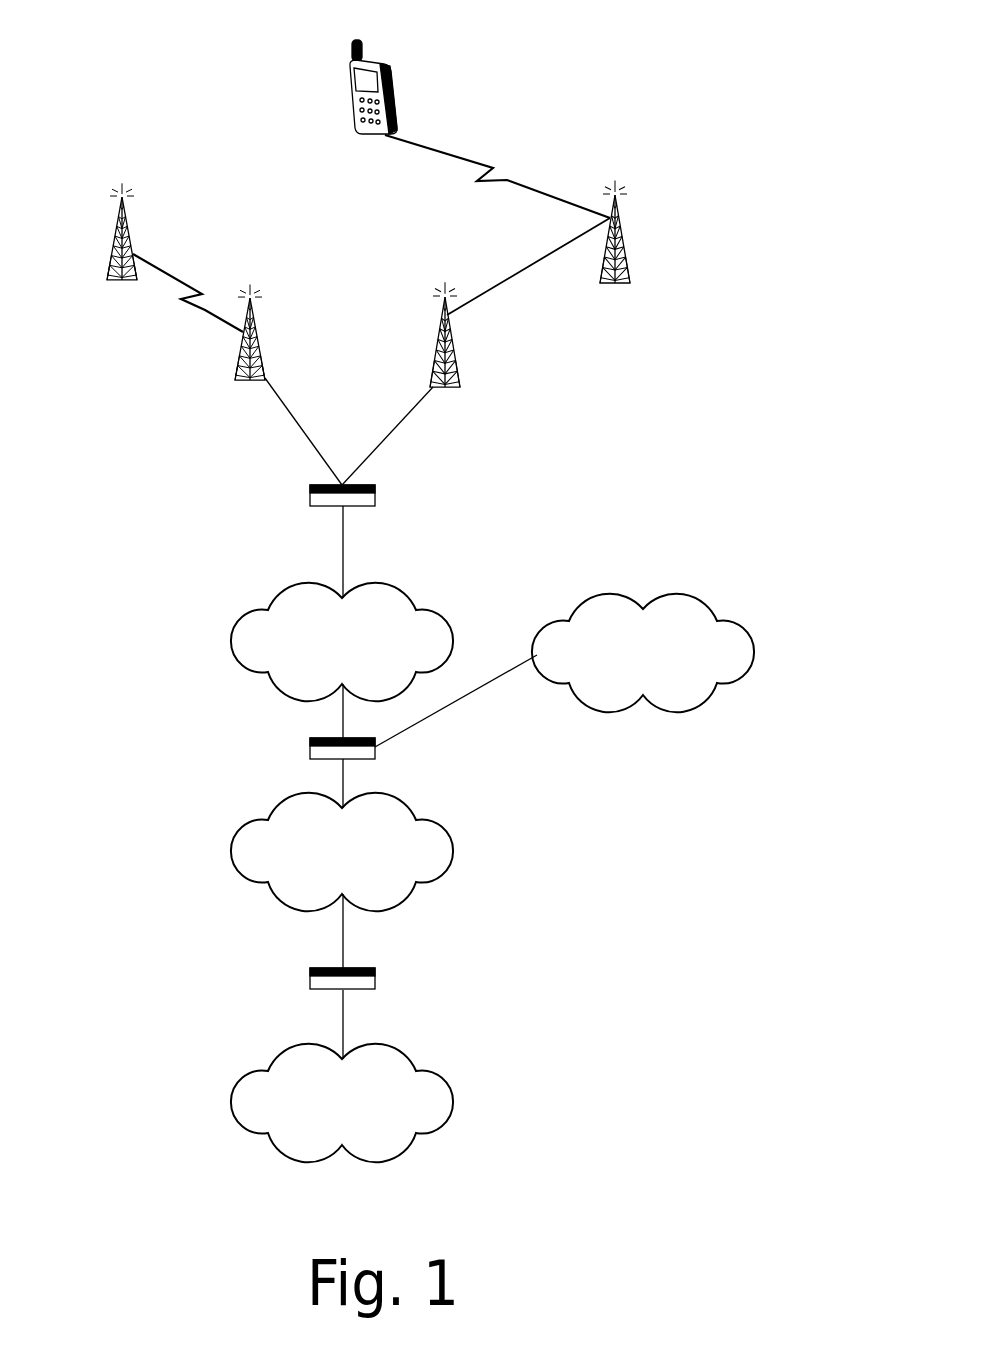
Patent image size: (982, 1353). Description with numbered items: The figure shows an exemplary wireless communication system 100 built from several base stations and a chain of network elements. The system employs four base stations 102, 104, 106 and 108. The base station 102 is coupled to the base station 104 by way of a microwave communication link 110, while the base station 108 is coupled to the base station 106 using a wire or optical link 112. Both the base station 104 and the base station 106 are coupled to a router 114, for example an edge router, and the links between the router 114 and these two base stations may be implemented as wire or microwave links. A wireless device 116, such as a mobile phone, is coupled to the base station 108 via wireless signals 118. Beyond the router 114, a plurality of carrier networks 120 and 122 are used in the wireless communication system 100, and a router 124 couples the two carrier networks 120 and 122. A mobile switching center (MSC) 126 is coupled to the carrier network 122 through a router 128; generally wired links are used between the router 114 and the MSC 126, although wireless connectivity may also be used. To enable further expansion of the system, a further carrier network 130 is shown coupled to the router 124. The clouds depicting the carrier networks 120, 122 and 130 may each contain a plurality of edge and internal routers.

The wireless communication system 100 is at (719, 38).
The base station 102 is at (132, 246).
The base station 104 is at (262, 356).
The base station 106 is at (453, 350).
The base station 108 is at (624, 230).
The microwave communication link 110 is at (178, 280).
The wire or optical link 112 is at (543, 265).
The router 114 is at (375, 490).
The wireless device 116 is at (397, 84).
The wireless signals 118 is at (493, 168).
The carrier network 120 is at (342, 642).
The carrier network 122 is at (342, 852).
The router 124 is at (312, 740).
The mobile switching center (MSC) 126 is at (342, 1103).
The router 128 is at (312, 970).
The carrier network 130 is at (643, 653).